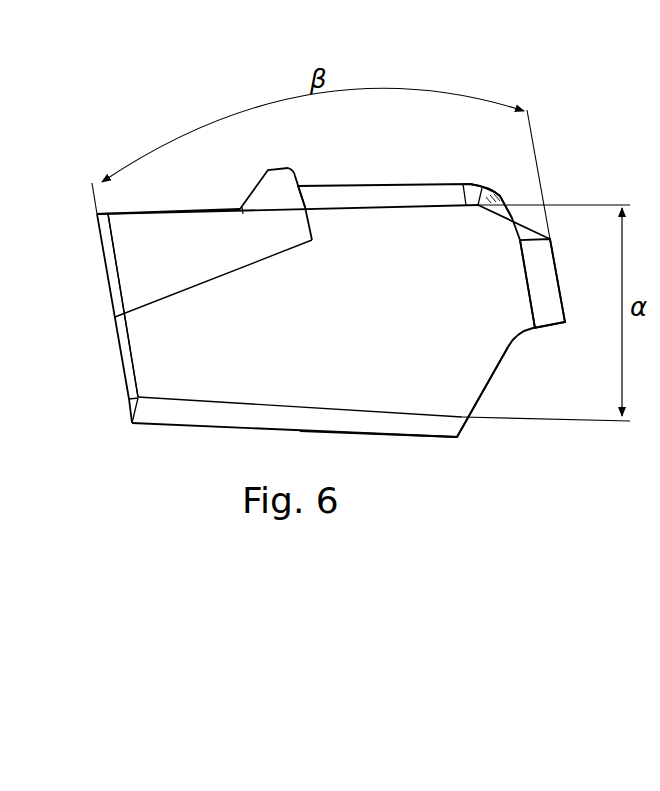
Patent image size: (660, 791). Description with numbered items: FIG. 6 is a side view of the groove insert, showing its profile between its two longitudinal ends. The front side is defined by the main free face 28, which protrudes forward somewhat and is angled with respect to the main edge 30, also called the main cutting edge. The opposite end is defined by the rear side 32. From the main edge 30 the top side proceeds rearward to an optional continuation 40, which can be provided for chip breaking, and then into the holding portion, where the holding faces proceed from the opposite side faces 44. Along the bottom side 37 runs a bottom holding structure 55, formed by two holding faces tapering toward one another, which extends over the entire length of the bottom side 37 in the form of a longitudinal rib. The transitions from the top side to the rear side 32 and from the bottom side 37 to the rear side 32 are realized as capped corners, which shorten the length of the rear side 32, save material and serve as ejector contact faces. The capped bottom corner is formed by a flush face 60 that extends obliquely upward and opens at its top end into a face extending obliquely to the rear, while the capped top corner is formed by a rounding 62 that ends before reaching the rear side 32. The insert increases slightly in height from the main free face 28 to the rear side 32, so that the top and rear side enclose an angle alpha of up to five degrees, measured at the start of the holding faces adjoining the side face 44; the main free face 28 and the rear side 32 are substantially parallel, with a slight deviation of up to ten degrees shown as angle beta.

The main free face 28 is at (118, 334).
The main edge 30 is at (91, 216).
The rear side 32 is at (558, 273).
The bottom side 37 is at (315, 420).
The continuation 40 is at (282, 174).
The side face 44 is at (376, 338).
The bottom holding structure 55 is at (425, 423).
The flush face 60 is at (485, 387).
The rounding 62 is at (494, 193).